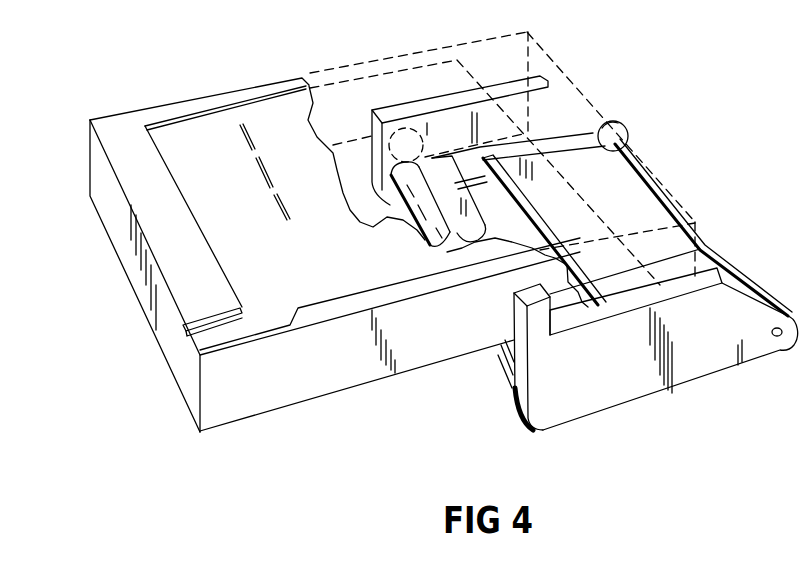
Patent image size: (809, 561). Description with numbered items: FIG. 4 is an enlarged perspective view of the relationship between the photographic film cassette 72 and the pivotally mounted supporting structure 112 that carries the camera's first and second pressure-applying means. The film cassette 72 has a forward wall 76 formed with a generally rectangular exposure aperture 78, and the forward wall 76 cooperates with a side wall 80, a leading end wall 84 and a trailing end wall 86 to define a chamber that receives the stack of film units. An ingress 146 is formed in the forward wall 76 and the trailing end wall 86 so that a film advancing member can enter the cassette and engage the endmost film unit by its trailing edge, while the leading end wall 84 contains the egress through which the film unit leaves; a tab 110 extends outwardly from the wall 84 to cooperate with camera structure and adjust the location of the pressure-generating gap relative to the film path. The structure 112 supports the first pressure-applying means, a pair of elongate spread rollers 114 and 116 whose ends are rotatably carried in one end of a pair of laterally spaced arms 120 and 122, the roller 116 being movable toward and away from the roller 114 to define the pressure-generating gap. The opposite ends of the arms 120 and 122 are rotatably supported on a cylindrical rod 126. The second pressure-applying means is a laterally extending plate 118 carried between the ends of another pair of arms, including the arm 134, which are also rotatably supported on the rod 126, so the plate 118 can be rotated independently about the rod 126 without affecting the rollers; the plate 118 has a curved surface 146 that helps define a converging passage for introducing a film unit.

The film cassette 72 is at (402, 230).
The forward wall 76 is at (155, 170).
The exposure aperture 78 is at (186, 211).
The side wall 80 is at (327, 383).
The leading end wall 84 is at (563, 70).
The trailing end wall 86 is at (127, 268).
The tab 110 is at (513, 290).
The supporting structure 112 is at (627, 275).
The spread roller 114 is at (372, 143).
The spread roller 116 is at (405, 221).
The plate 118 is at (515, 222).
The arm 120 is at (610, 400).
The arm 122 is at (443, 97).
The cylindrical rod 126 is at (698, 235).
The arm 134 is at (585, 137).
The ingress 146 is at (212, 321).